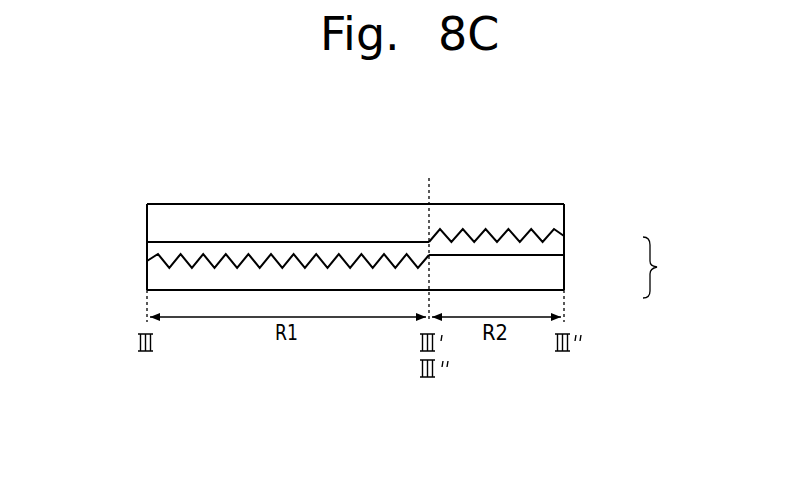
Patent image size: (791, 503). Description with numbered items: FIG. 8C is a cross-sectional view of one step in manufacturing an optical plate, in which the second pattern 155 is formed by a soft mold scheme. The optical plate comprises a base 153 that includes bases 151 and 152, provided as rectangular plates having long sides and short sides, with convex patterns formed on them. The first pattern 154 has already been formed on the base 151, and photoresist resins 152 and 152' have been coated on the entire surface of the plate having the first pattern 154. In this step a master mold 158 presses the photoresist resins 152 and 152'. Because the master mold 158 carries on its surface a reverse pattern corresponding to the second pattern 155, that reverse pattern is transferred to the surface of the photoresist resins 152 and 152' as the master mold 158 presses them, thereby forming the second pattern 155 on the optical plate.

The master mold 158 is at (156, 217).
The photoresist resin 152' is at (248, 232).
The first pattern 154 is at (150, 260).
The second pattern 155 is at (568, 237).
The photoresist resin 152 is at (535, 252).
The base 151 is at (157, 291).
The base 153 is at (671, 267).